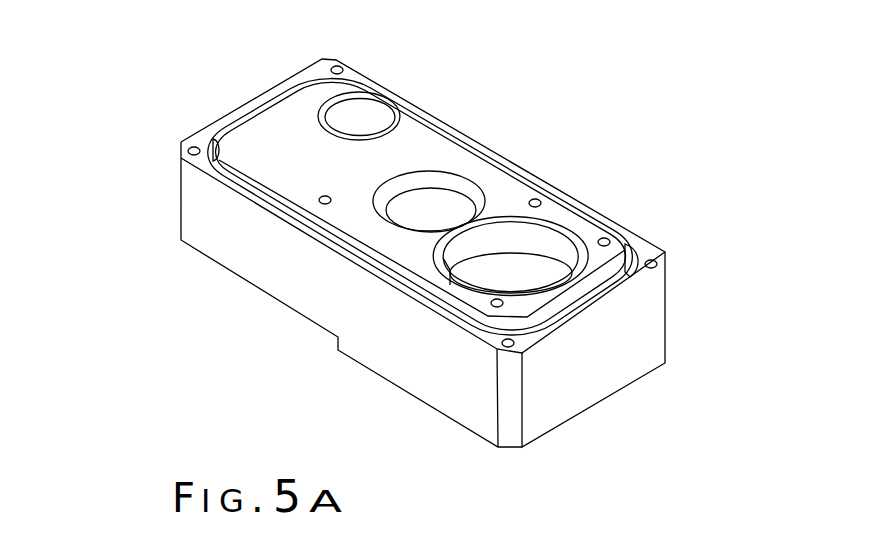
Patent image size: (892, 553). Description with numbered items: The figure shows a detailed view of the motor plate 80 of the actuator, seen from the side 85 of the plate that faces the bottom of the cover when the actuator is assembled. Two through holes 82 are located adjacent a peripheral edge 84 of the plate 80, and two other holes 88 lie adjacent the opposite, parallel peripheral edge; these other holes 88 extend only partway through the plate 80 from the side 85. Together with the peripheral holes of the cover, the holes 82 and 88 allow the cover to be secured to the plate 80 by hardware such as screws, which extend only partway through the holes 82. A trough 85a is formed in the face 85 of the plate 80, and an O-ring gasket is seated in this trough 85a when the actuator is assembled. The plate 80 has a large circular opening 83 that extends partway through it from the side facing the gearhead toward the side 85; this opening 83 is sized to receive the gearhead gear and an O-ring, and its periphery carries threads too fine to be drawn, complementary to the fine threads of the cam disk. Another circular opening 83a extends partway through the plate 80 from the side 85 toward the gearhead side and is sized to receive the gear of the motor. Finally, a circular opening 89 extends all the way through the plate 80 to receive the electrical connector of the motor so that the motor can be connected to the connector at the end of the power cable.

The motor plate 80 is at (118, 78).
The through holes 82 is at (658, 263).
The large circular opening 83 is at (542, 254).
The circular opening 83a is at (438, 208).
The peripheral edge 84 is at (588, 362).
The side 85 is at (421, 147).
The trough 85a is at (347, 257).
The holes 88 is at (338, 66).
The circular opening 89 is at (374, 112).